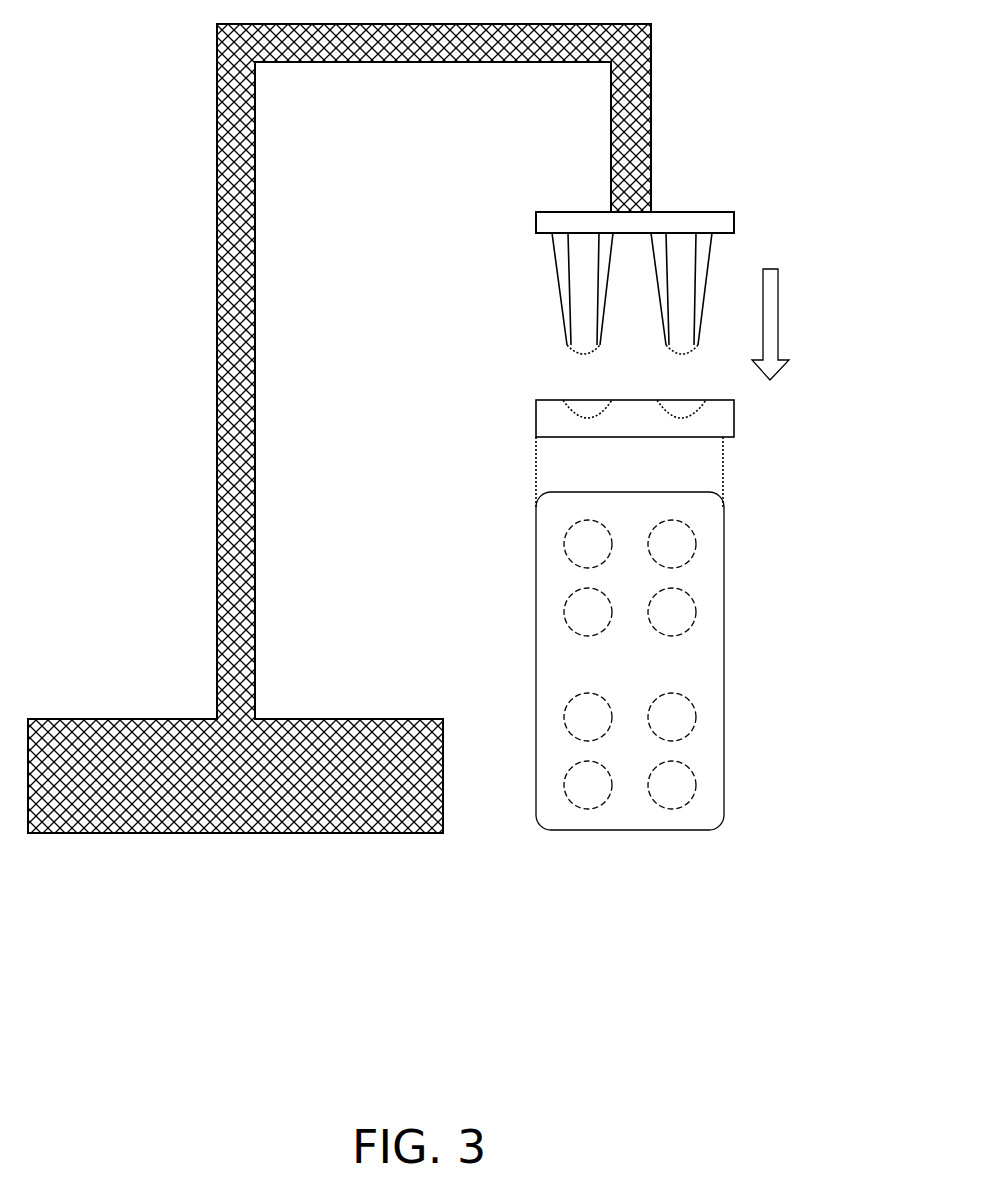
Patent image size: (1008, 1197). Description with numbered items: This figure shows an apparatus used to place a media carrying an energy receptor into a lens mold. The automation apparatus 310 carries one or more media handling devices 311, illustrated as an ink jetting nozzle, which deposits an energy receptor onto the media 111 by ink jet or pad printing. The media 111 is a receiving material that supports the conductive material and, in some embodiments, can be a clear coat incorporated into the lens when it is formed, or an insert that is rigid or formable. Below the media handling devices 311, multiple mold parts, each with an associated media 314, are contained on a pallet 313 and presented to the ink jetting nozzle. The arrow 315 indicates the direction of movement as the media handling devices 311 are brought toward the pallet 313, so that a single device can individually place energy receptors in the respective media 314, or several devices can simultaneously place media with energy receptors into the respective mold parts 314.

The automation apparatus 310 is at (339, 428).
The media handling device 311 is at (746, 208).
The media 111 is at (665, 358).
The downward movement direction 315 is at (791, 324).
The pallet 313 is at (735, 420).
The mold part with associated media 314 is at (696, 544).